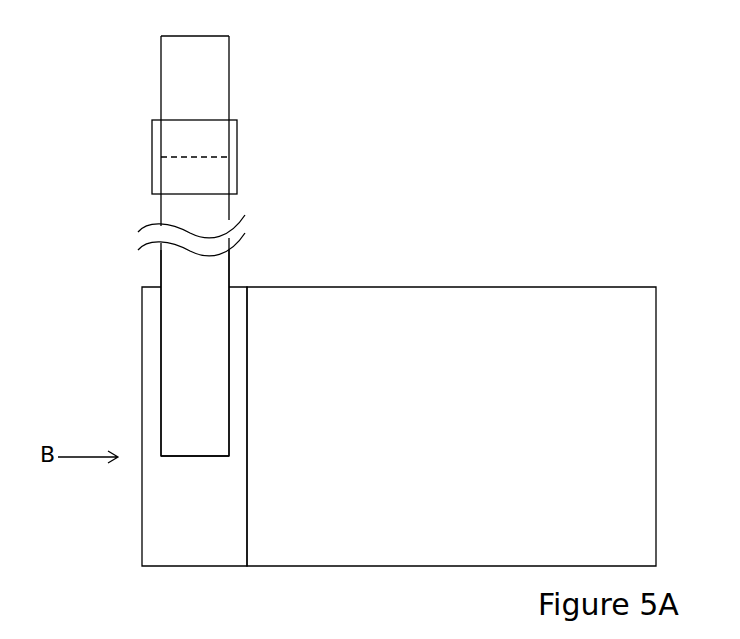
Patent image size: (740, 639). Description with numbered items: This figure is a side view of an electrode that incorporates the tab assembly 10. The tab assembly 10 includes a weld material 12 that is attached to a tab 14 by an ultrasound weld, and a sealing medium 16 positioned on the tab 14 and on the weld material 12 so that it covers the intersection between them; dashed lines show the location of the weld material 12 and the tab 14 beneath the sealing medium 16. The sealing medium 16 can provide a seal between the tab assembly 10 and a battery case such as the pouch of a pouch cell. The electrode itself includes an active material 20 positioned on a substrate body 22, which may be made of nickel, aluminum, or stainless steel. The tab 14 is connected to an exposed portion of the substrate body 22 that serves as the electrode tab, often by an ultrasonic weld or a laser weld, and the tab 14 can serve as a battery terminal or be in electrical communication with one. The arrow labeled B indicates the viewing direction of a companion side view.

The tab assembly 10 is at (118, 77).
The weld material 12 is at (229, 77).
The tab 14 is at (229, 270).
The sealing medium 16 is at (153, 156).
The active material 20 is at (393, 322).
The substrate body 22 is at (162, 568).